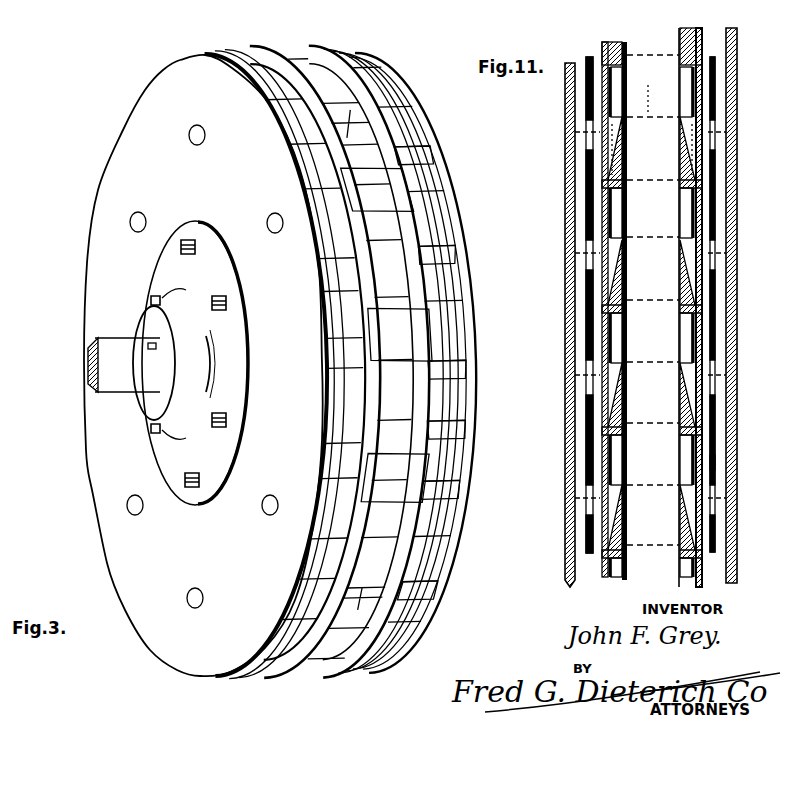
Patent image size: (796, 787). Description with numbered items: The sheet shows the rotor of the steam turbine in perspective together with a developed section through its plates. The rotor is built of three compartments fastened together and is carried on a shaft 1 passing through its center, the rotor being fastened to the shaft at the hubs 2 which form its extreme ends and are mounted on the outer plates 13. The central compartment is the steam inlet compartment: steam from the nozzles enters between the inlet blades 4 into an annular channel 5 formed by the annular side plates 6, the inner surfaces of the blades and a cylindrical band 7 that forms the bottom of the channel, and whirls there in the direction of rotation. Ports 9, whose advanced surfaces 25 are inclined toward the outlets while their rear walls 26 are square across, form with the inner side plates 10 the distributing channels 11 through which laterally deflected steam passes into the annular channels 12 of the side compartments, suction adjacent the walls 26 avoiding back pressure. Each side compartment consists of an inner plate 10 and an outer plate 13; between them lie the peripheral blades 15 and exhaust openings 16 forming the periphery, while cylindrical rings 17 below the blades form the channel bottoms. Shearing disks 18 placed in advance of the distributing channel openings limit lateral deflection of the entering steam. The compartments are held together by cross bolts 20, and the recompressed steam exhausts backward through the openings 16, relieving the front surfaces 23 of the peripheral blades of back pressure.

In FIG. 3, the shaft 1 is at (122, 338).
In FIG. 3, the hub 2 is at (142, 393).
In FIG. 3, the inlet blade 4 is at (352, 108).
In FIG. 11, the annular channel 5 is at (668, 92).
In FIG. 3, the annular side plate 6 is at (366, 230).
In FIG. 11, the annular side plate 6 is at (682, 62).
In FIG. 11, the cylindrical band 7 is at (652, 149).
In FIG. 11, the port 9 is at (682, 210).
In FIG. 3, the inner side plate 10 is at (254, 46).
In FIG. 11, the inner side plate 10 is at (683, 330).
In FIG. 11, the distributing channel 11 is at (692, 245).
In FIG. 11, the annular channel 12 is at (580, 157).
In FIG. 3, the outer plate 13 is at (131, 124).
In FIG. 11, the outer plate 13 is at (565, 350).
In FIG. 3, the peripheral blade 15 is at (402, 114).
In FIG. 3, the exhaust opening 16 is at (456, 250).
In FIG. 11, the cylindrical ring 17 is at (714, 462).
In FIG. 3, the shearing disk 18 is at (437, 191).
In FIG. 11, the shearing disk 18 is at (590, 315).
In FIG. 3, the cross bolt 20 is at (275, 214).
In FIG. 3, the front surface 23 is at (452, 356).
In FIG. 11, the advanced surface 25 is at (682, 272).
In FIG. 11, the rear wall 26 is at (682, 178).